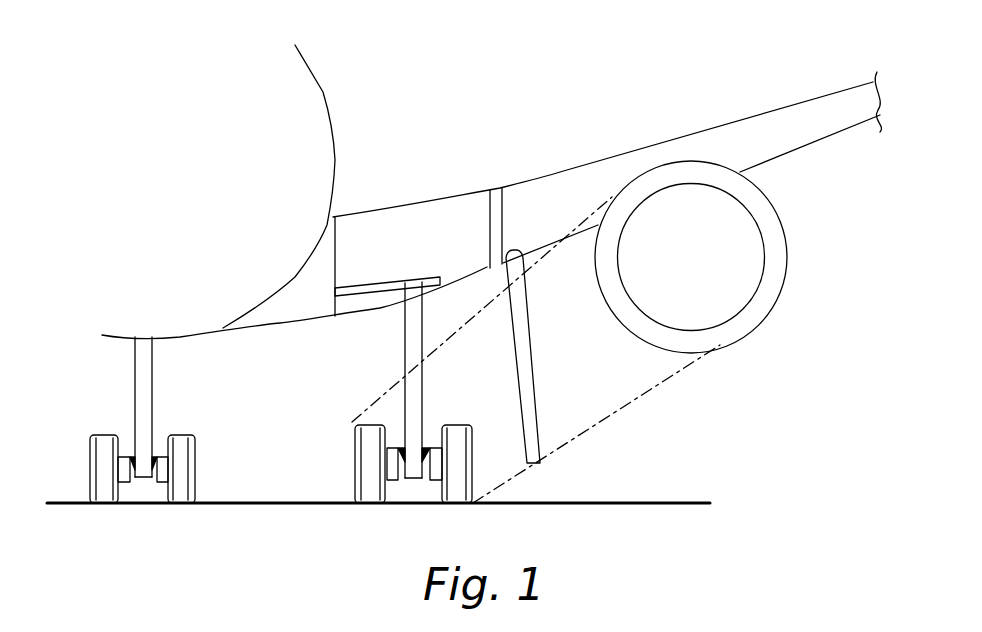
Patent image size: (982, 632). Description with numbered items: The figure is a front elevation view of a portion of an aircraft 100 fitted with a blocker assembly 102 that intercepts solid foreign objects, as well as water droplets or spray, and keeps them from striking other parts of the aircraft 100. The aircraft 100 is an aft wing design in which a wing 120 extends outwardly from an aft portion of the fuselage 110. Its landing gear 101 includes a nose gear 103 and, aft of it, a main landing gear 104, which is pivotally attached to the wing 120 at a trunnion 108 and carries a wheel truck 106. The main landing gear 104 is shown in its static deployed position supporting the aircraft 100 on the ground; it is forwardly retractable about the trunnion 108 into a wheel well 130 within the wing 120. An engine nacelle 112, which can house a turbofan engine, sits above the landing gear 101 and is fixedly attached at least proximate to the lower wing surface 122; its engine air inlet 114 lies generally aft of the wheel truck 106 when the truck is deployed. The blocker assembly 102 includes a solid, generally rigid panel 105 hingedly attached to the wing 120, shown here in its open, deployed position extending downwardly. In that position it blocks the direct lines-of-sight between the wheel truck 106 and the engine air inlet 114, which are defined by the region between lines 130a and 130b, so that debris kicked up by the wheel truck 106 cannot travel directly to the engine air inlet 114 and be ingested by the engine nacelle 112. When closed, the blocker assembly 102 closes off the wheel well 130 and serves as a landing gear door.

The aircraft 100 is at (464, 259).
The landing gear 101 is at (307, 423).
The blocker assembly 102 is at (607, 268).
The nose gear 103 is at (259, 419).
The main landing gear 104 is at (398, 343).
The panel 105 is at (537, 355).
The wheel truck 106 is at (353, 463).
The trunnion 108 is at (410, 275).
The fuselage 110 is at (323, 90).
The engine nacelle 112 is at (787, 257).
The engine air inlet 114 is at (745, 303).
The wing 120 is at (733, 122).
The lower wing surface 122 is at (783, 155).
The wheel well 130 is at (453, 218).
The line 130a is at (473, 323).
The line 130b is at (640, 398).